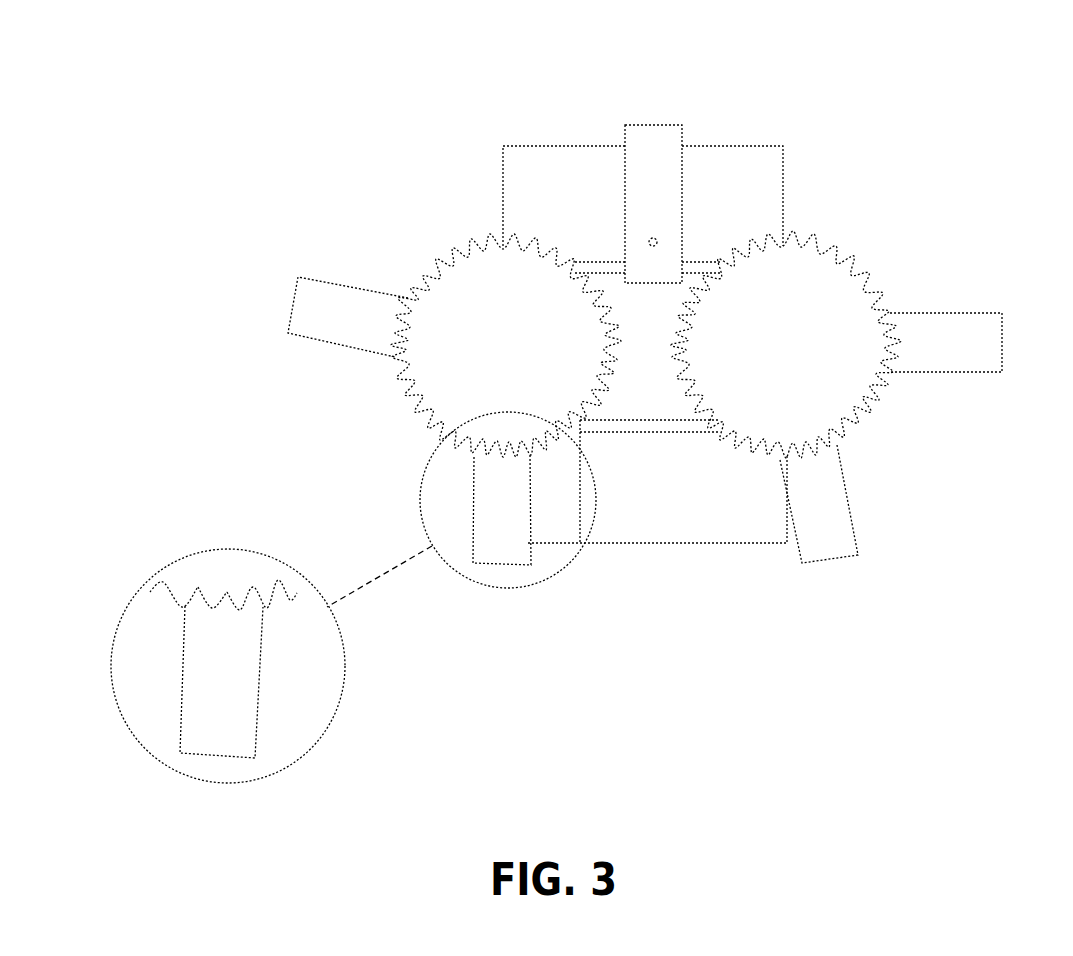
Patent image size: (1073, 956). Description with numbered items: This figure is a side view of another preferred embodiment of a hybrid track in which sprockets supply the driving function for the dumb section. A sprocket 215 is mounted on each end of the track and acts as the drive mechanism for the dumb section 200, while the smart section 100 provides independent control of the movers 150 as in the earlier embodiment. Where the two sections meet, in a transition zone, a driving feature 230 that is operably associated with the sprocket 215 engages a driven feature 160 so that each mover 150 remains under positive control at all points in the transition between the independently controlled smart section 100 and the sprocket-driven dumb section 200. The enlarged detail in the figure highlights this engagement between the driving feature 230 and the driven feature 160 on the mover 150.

The smart section 100 is at (678, 284).
The mover 150 is at (312, 793).
The driven feature 160 is at (263, 778).
The dumb section 200 is at (852, 335).
The sprocket 215 is at (453, 345).
The driving feature 230 is at (143, 644).